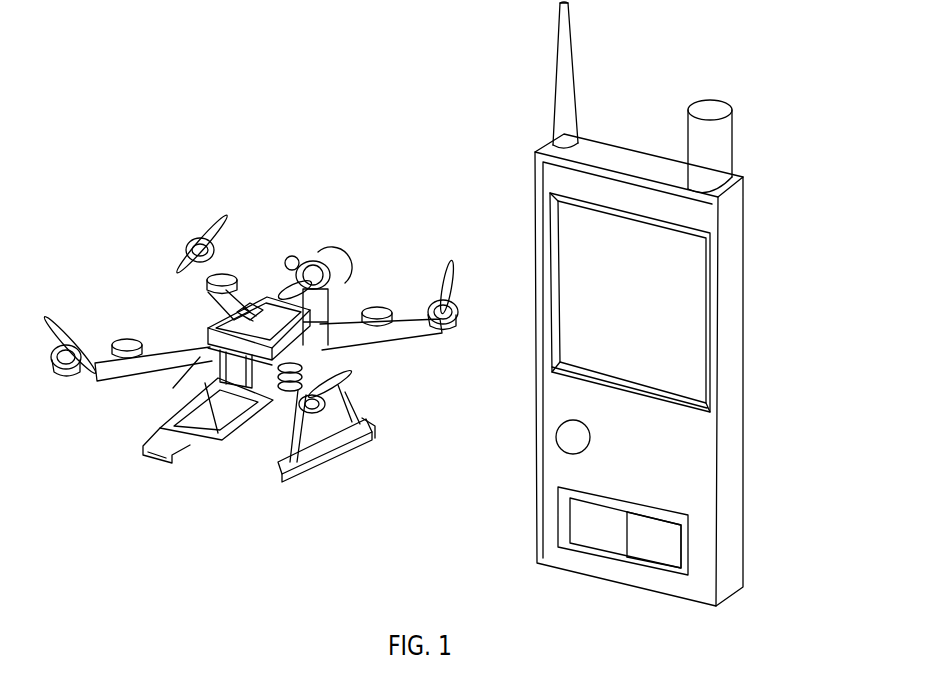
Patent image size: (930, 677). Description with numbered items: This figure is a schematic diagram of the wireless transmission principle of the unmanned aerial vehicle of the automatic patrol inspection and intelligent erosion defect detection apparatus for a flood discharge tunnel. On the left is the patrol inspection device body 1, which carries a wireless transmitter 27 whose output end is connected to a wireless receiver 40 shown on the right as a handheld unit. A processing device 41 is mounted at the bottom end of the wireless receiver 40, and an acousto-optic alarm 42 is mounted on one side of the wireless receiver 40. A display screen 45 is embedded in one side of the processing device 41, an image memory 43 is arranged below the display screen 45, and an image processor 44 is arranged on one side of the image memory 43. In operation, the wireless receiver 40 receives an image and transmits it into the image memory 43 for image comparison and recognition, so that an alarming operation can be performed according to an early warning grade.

The patrol inspection device body 1 is at (249, 385).
The wireless transmitter 27 is at (190, 385).
The wireless receiver 40 is at (570, 65).
The processing device 41 is at (607, 173).
The acousto-optic alarm 42 is at (727, 132).
The image memory 43 is at (617, 522).
The image processor 44 is at (648, 545).
The display screen 45 is at (650, 313).